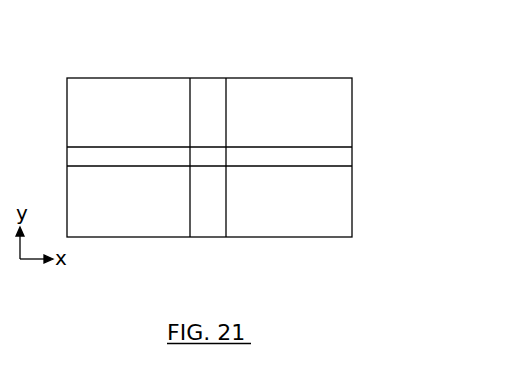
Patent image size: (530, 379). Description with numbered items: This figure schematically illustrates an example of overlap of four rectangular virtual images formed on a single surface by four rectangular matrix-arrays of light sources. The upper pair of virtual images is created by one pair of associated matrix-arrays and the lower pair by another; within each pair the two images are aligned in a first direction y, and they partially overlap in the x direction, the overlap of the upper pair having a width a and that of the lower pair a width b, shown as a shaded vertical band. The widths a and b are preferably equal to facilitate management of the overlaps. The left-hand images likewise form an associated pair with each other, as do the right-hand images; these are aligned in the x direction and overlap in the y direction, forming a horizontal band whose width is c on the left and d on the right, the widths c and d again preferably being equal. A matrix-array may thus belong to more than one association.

The width of overlap a is at (188, 78).
The width of overlap b is at (188, 237).
The width of overlap c is at (62, 145).
The width of overlap d is at (352, 145).